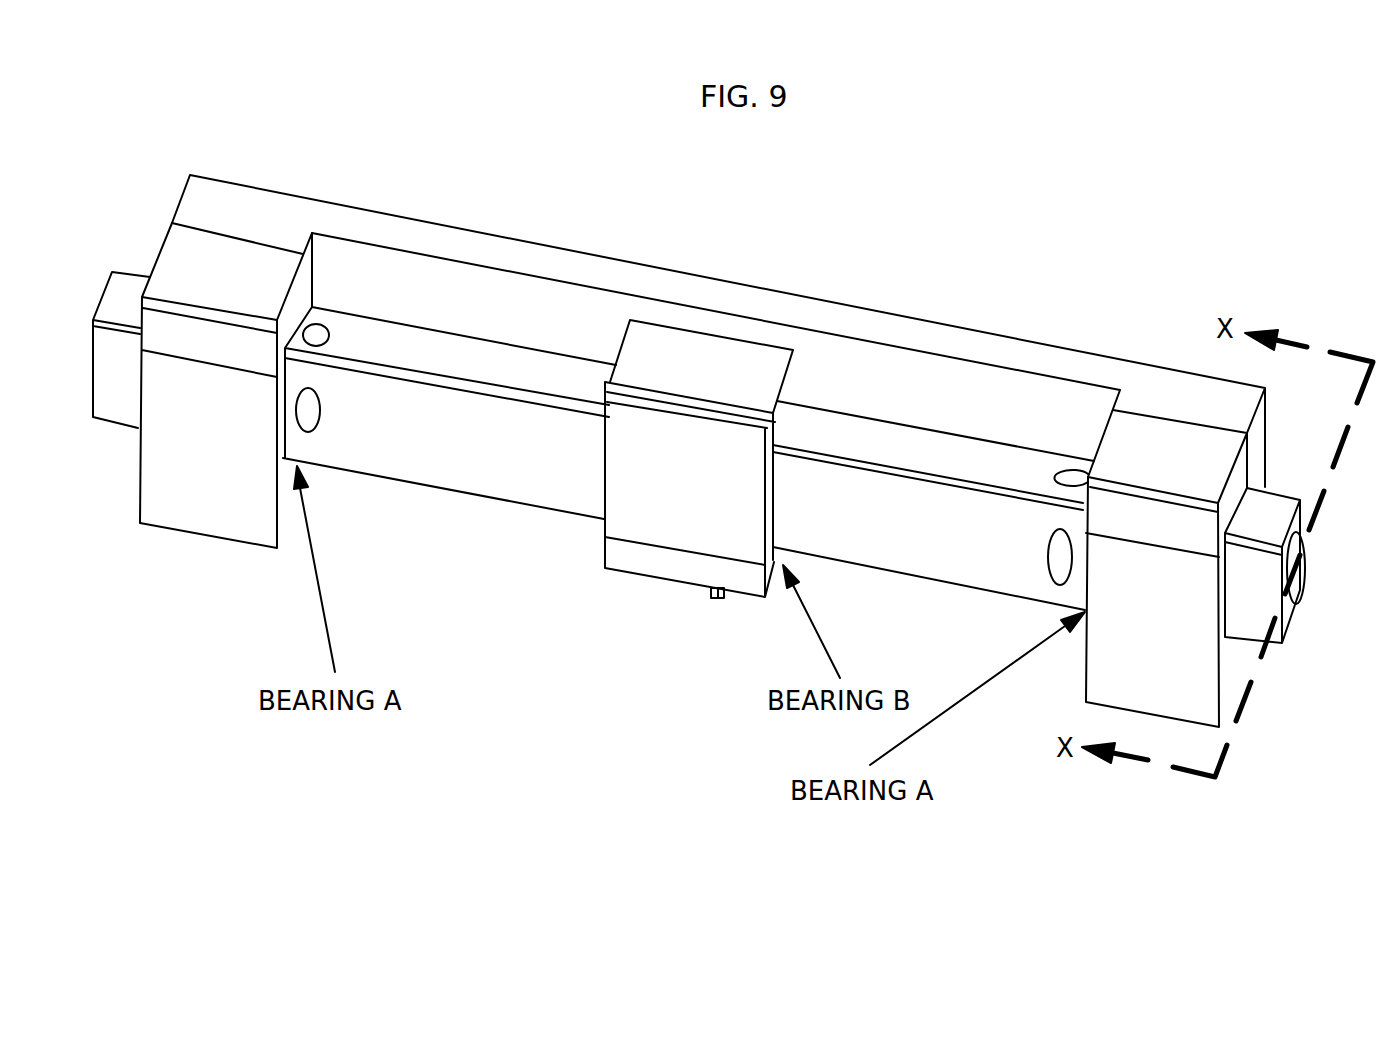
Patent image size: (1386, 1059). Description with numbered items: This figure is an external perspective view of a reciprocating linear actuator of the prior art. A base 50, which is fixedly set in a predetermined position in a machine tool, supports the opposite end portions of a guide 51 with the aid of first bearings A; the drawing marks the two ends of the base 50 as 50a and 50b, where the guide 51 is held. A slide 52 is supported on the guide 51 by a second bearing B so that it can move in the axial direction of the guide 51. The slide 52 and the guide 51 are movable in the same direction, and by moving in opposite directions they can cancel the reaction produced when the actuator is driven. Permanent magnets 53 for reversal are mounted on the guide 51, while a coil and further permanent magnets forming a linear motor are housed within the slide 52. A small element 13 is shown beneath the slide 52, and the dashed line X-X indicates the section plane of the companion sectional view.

The base 50 is at (985, 355).
The first bearing support block 50a is at (195, 502).
The second bearing support block 50b is at (1105, 650).
The guide 51 is at (472, 472).
The slide 52 is at (678, 350).
The permanent magnets for reversal 53 is at (328, 334).
The sensor 13 is at (723, 603).